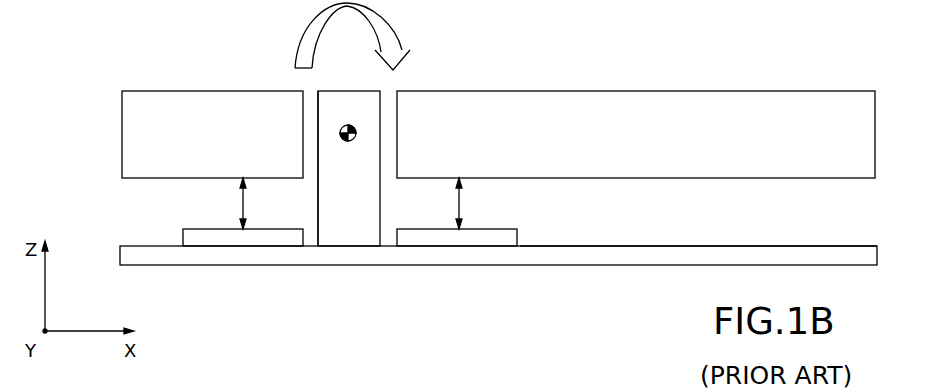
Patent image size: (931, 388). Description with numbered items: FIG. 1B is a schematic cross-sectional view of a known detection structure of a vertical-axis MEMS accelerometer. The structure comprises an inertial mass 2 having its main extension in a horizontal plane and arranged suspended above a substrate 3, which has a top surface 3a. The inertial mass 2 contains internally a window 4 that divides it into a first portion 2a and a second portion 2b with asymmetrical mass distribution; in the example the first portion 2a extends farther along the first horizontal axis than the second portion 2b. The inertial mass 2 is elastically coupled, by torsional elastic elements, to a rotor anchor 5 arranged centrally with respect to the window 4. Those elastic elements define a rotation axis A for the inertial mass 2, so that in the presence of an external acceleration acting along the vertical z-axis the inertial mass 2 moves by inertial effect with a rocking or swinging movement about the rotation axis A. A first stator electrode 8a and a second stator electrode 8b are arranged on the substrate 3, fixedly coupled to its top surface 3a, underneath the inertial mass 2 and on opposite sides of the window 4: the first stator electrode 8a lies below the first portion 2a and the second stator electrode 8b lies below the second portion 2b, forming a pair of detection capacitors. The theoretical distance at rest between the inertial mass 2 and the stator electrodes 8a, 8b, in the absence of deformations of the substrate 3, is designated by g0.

The inertial mass 2 is at (498, 95).
The first portion 2a is at (542, 104).
The second portion 2b is at (201, 104).
The substrate 3 is at (855, 252).
The top surface 3a is at (828, 241).
The window 4 is at (309, 110).
The rotor anchor 5 is at (329, 215).
The first stator electrode 8a is at (424, 238).
The second stator electrode 8b is at (262, 238).
The rotation axis A is at (347, 128).
The theoretical distance at rest g0 is at (339, 203).